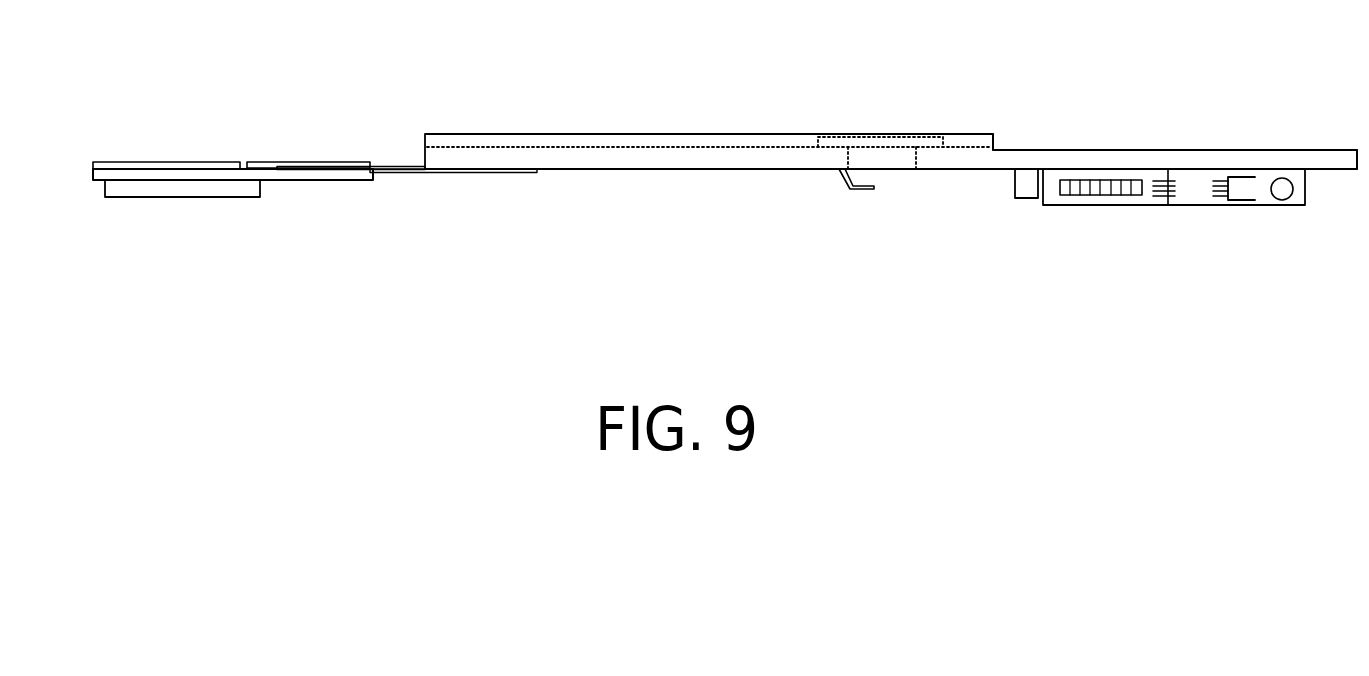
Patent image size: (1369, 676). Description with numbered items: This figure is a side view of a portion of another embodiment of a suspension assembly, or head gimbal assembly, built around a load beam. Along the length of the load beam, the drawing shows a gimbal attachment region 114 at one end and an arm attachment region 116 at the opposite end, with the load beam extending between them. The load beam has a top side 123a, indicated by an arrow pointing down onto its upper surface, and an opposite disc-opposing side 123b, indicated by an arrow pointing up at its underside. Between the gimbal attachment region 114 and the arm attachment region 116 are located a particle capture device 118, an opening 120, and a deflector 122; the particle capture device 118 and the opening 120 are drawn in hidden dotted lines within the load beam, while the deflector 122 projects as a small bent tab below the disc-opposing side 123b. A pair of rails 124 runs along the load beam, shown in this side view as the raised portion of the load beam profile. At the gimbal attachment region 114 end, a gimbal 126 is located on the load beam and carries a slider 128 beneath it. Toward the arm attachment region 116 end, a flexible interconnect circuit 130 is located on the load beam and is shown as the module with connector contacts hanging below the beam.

The gimbal attachment region 114 is at (505, 147).
The arm attachment region 116 is at (1321, 149).
The particle capture device 118 is at (896, 137).
The opening 120 is at (896, 137).
The deflector 122 is at (866, 190).
The top side 123a is at (1006, 149).
The disc-opposing side 123b is at (1001, 170).
The pair of rails 124 is at (477, 133).
The gimbal 126 is at (163, 171).
The slider 128 is at (143, 194).
The flexible interconnect circuit 130 is at (1300, 207).